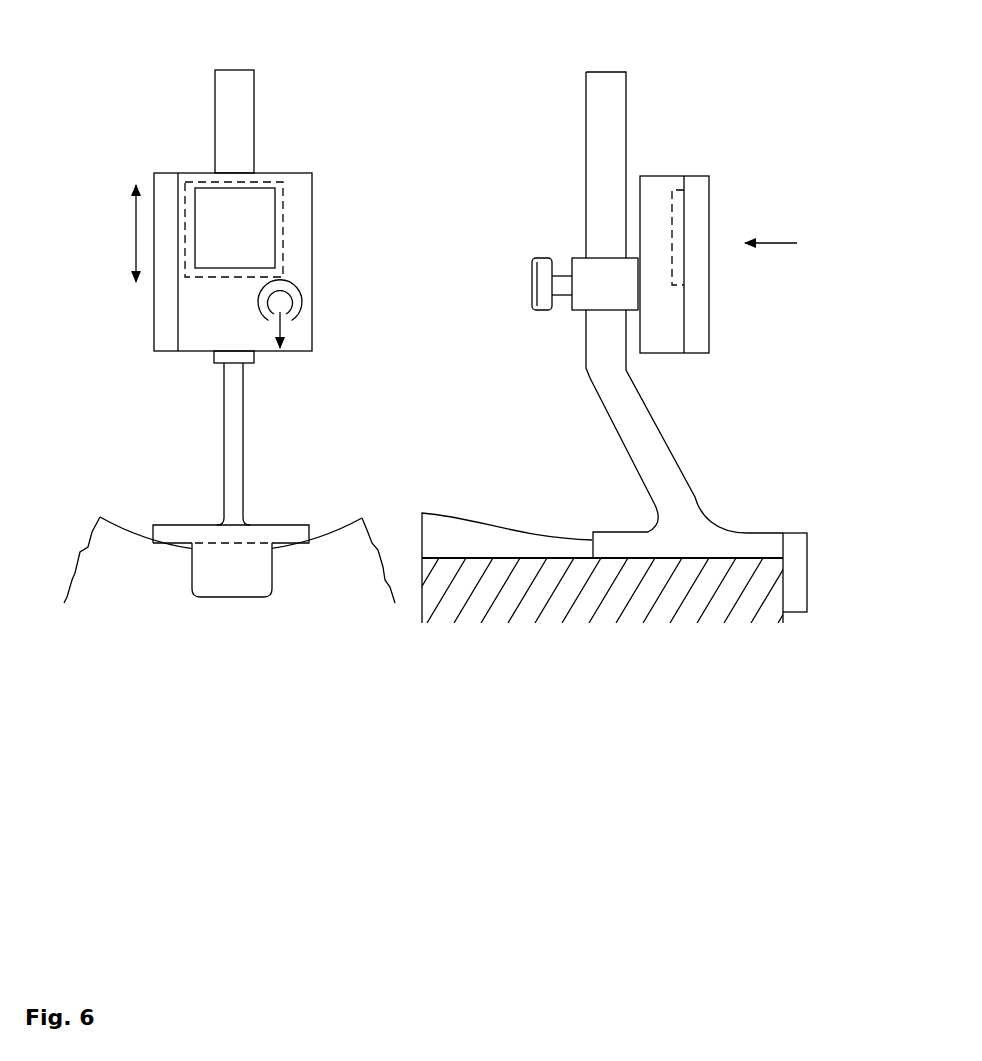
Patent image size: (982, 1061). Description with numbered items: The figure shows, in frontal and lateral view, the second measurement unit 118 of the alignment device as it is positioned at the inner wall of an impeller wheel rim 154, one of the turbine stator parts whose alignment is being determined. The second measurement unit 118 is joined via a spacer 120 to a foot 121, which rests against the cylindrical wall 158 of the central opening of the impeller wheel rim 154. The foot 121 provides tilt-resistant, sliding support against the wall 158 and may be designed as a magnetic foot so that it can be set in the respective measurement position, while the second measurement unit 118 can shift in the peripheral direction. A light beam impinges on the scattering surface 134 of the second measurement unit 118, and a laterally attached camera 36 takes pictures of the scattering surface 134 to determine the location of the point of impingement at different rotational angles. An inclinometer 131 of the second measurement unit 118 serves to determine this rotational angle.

The second measurement unit 118 is at (192, 137).
The spacer 120 is at (245, 107).
The scattering surface 134 is at (245, 207).
The camera 36 is at (165, 303).
The inclinometer 131 is at (292, 305).
The foot 121 is at (292, 532).
The cylindrical wall 158 is at (125, 532).
The impeller wheel rim 154 is at (118, 590).